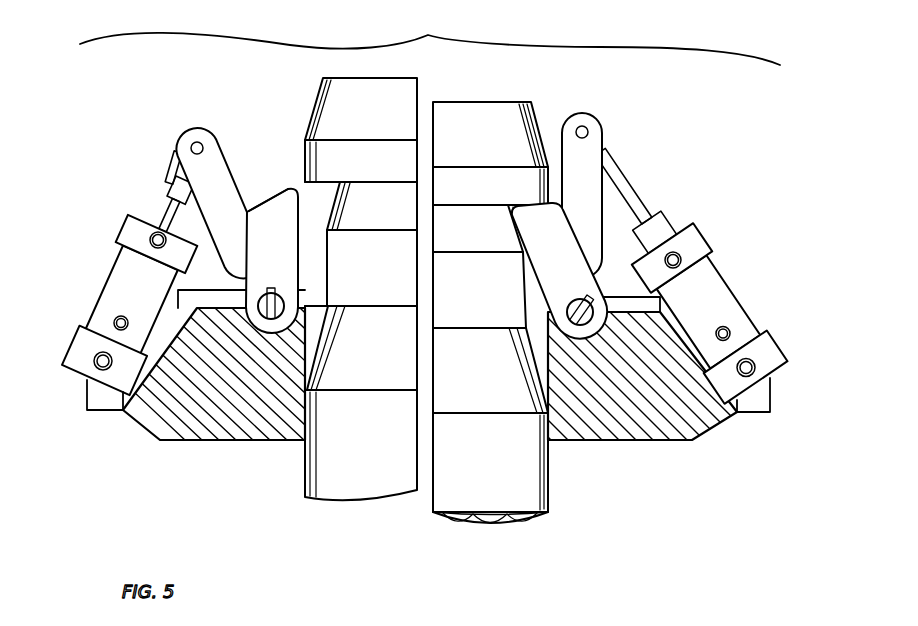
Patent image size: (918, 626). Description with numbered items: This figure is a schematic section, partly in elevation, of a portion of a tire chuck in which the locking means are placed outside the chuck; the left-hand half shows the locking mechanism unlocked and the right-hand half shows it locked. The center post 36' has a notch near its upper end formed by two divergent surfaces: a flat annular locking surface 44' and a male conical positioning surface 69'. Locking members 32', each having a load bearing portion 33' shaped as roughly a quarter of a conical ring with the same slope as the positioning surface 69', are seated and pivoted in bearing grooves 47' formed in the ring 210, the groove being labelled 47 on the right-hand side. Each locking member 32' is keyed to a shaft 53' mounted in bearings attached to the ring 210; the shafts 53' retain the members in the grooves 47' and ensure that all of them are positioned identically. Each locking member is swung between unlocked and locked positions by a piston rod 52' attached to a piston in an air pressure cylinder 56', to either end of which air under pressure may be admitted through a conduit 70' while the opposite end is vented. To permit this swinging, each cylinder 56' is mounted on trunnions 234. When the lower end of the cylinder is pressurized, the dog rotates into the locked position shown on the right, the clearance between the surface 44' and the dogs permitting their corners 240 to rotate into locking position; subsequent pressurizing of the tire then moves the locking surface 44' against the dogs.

The locking member 32' is at (418, 184).
The locking surface 44' is at (306, 183).
The corners of the locking dogs 240 is at (278, 191).
The load bearing portion 33' is at (272, 261).
The shaft 53' is at (432, 271).
The male conical positioning surface 69' is at (358, 255).
The bearing groove 47' is at (334, 327).
The pivot axle 47 is at (515, 307).
The center post 36' is at (426, 321).
The piston rod 52' is at (418, 200).
The conduit 70' is at (426, 280).
The air pressure cylinder 56' is at (421, 309).
The trunnions 234 is at (97, 366).
The ring 210 is at (206, 436).